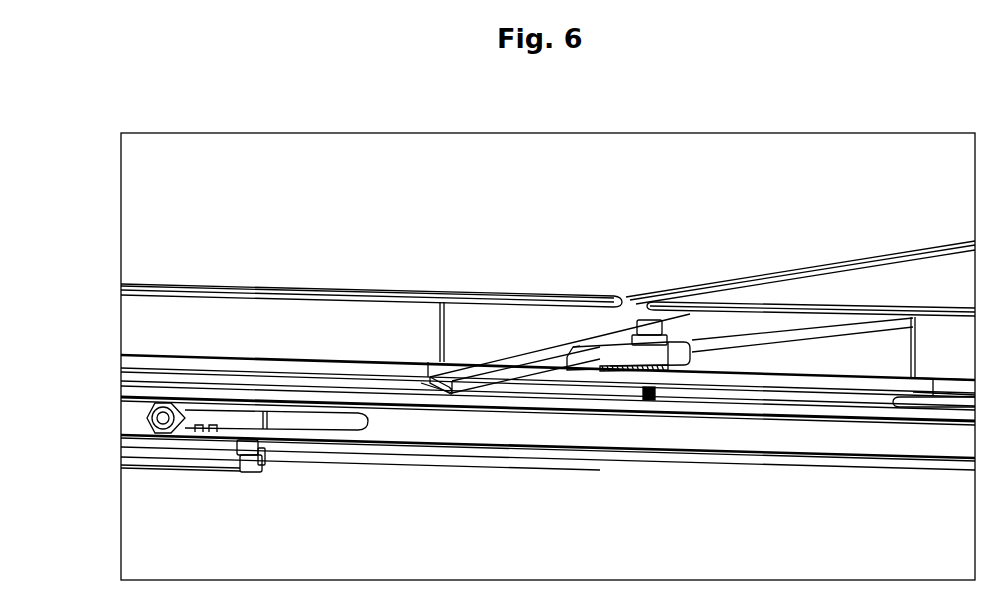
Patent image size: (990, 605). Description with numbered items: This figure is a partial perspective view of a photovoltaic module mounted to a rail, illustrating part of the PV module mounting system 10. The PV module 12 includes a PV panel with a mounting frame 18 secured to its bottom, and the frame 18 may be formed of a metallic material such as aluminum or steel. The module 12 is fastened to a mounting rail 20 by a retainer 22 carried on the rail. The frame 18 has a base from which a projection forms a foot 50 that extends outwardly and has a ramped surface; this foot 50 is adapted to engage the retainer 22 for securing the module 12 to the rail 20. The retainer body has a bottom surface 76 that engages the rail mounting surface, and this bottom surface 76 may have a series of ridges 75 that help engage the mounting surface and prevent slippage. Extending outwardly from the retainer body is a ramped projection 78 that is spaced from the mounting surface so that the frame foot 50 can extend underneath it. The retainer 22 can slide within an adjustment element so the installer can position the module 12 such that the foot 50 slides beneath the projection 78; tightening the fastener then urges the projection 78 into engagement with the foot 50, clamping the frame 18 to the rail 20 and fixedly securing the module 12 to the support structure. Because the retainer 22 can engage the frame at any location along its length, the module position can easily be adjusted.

The PV module mounting system 10 is at (443, 190).
The PV module 12 is at (700, 182).
The mounting frame 18 is at (157, 330).
The mounting rail 20 is at (773, 435).
The foot 50 is at (452, 388).
The ramped projection 78 is at (582, 355).
The bottom surface 76 is at (618, 367).
The ridges 75 is at (635, 372).
The retainer 22 is at (657, 353).